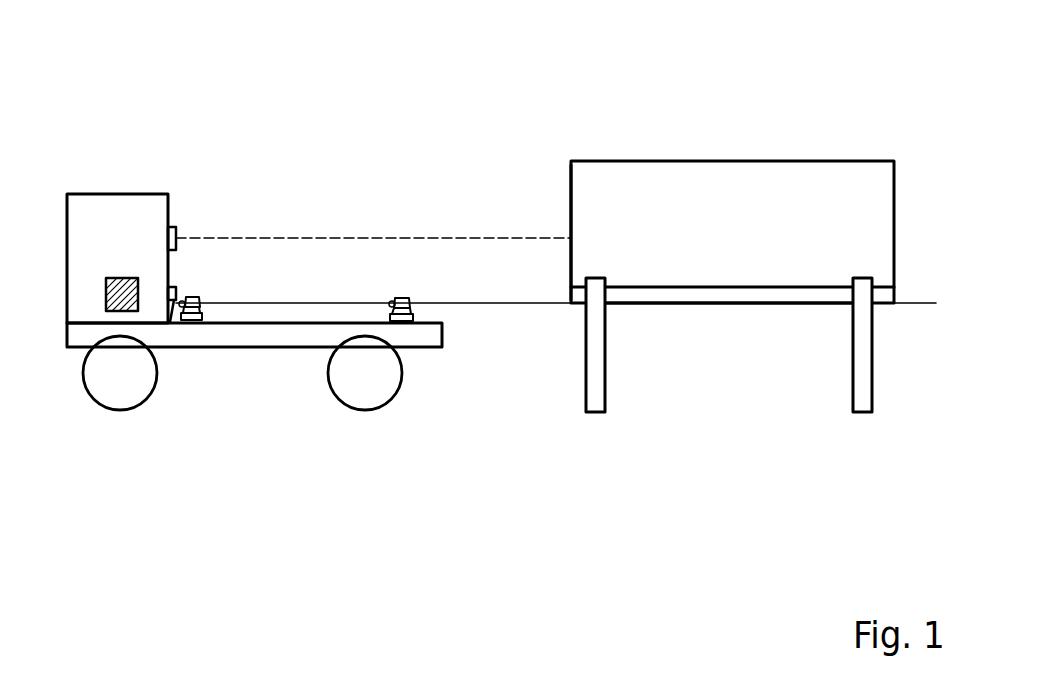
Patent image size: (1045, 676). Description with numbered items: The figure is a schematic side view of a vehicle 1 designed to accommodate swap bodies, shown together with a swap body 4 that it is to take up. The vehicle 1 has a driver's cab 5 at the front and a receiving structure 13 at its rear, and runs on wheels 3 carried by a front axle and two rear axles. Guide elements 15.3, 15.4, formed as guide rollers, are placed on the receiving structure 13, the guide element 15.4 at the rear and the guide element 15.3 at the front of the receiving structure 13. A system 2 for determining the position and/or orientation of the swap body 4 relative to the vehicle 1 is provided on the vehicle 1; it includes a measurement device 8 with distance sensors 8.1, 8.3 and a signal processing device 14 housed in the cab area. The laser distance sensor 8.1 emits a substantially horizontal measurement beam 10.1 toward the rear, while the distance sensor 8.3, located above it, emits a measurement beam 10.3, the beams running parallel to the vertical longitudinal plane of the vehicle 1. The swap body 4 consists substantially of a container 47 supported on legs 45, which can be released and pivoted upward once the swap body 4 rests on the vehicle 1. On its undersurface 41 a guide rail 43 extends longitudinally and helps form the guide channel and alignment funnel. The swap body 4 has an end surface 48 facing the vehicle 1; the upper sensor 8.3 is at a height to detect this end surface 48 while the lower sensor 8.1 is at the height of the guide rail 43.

The vehicle 1 is at (483, 295).
The system 2 is at (483, 295).
The wheels 3 is at (245, 463).
The swap body 4 is at (713, 295).
The driver's cab 5 is at (99, 392).
The measurement device 8 is at (128, 295).
The distance sensor 8.1 is at (259, 161).
The distance sensor 8.3 is at (224, 125).
The measurement beam 10.1 is at (556, 151).
The measurement beam 10.3 is at (373, 119).
The receiving structure 13 is at (254, 457).
The signal processing device 14 is at (154, 431).
The guide element 15.3 is at (233, 444).
The guide element 15.4 is at (442, 444).
The undersurface 41 is at (729, 447).
The guide rail 43 is at (732, 439).
The legs 45 is at (729, 434).
The container 47 is at (736, 151).
The end surface 48 is at (548, 150).